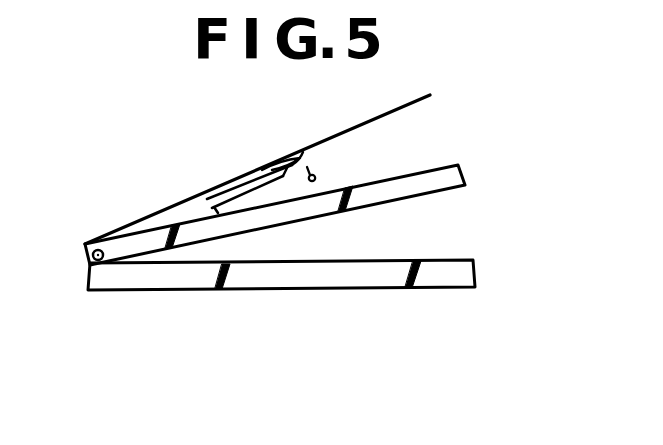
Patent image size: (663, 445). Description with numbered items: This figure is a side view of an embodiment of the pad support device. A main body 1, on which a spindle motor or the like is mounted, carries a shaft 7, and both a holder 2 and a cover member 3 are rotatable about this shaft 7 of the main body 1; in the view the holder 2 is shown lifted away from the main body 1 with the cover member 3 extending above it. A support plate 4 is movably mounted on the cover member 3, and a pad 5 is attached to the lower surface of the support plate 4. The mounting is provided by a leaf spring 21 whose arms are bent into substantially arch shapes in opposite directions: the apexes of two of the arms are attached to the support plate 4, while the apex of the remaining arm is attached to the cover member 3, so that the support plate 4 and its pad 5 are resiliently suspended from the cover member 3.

The main body 1 is at (477, 272).
The holder 2 is at (465, 177).
The cover member 3 is at (315, 143).
The support plate 4 is at (314, 173).
The pad 5 is at (285, 183).
The shaft 7 is at (85, 257).
The leaf spring 21 is at (232, 180).